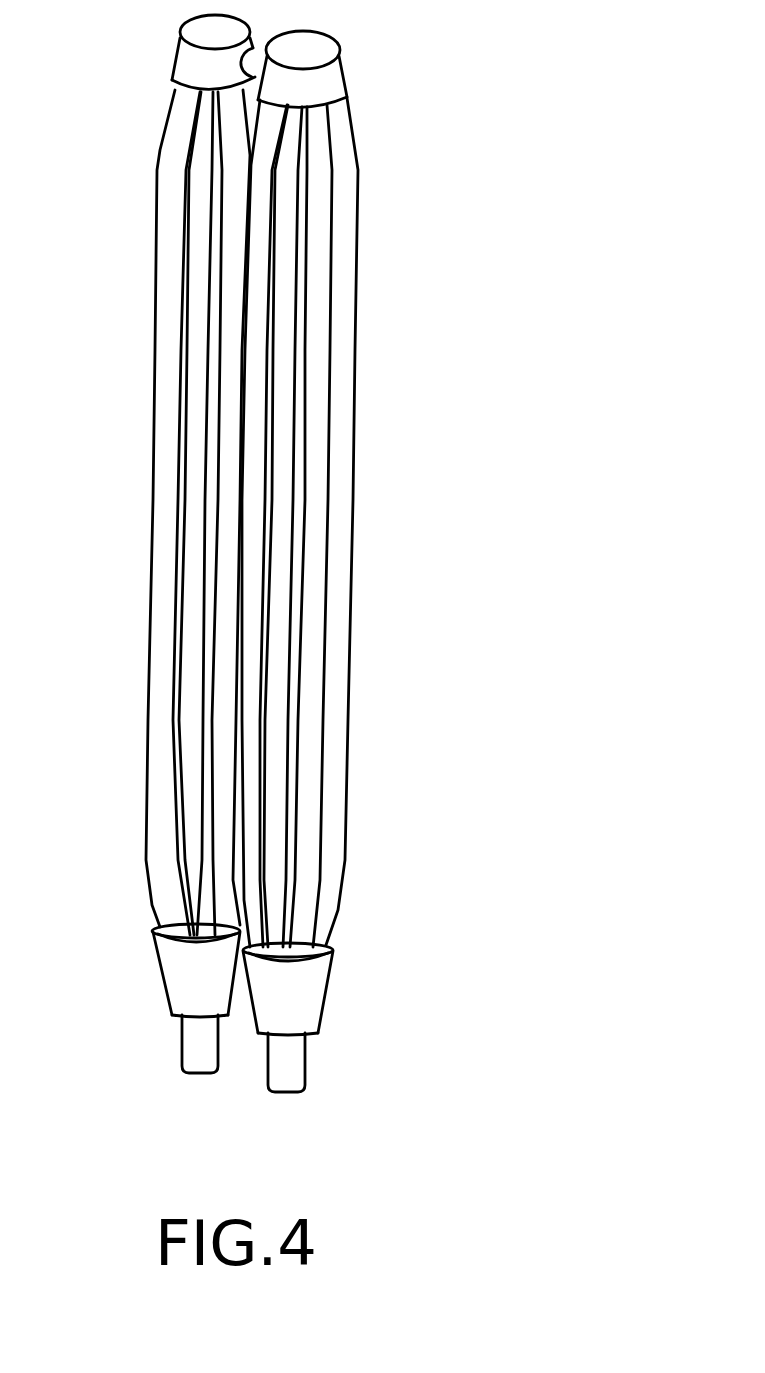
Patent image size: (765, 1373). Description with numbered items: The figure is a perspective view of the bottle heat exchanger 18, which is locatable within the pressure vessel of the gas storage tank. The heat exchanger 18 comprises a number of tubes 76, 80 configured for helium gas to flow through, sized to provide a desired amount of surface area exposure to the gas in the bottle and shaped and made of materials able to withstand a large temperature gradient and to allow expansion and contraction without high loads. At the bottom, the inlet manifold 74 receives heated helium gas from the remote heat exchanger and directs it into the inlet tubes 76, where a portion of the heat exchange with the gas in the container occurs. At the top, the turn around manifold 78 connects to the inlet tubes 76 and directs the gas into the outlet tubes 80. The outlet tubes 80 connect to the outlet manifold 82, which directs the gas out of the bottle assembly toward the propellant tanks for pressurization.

The bottle heat exchanger 18 is at (545, 647).
The inlet manifold 74 is at (167, 973).
The inlet tubes 76 is at (153, 480).
The turn around manifold 78 is at (213, 72).
The outlet tubes 80 is at (353, 478).
The outlet manifold 82 is at (298, 997).